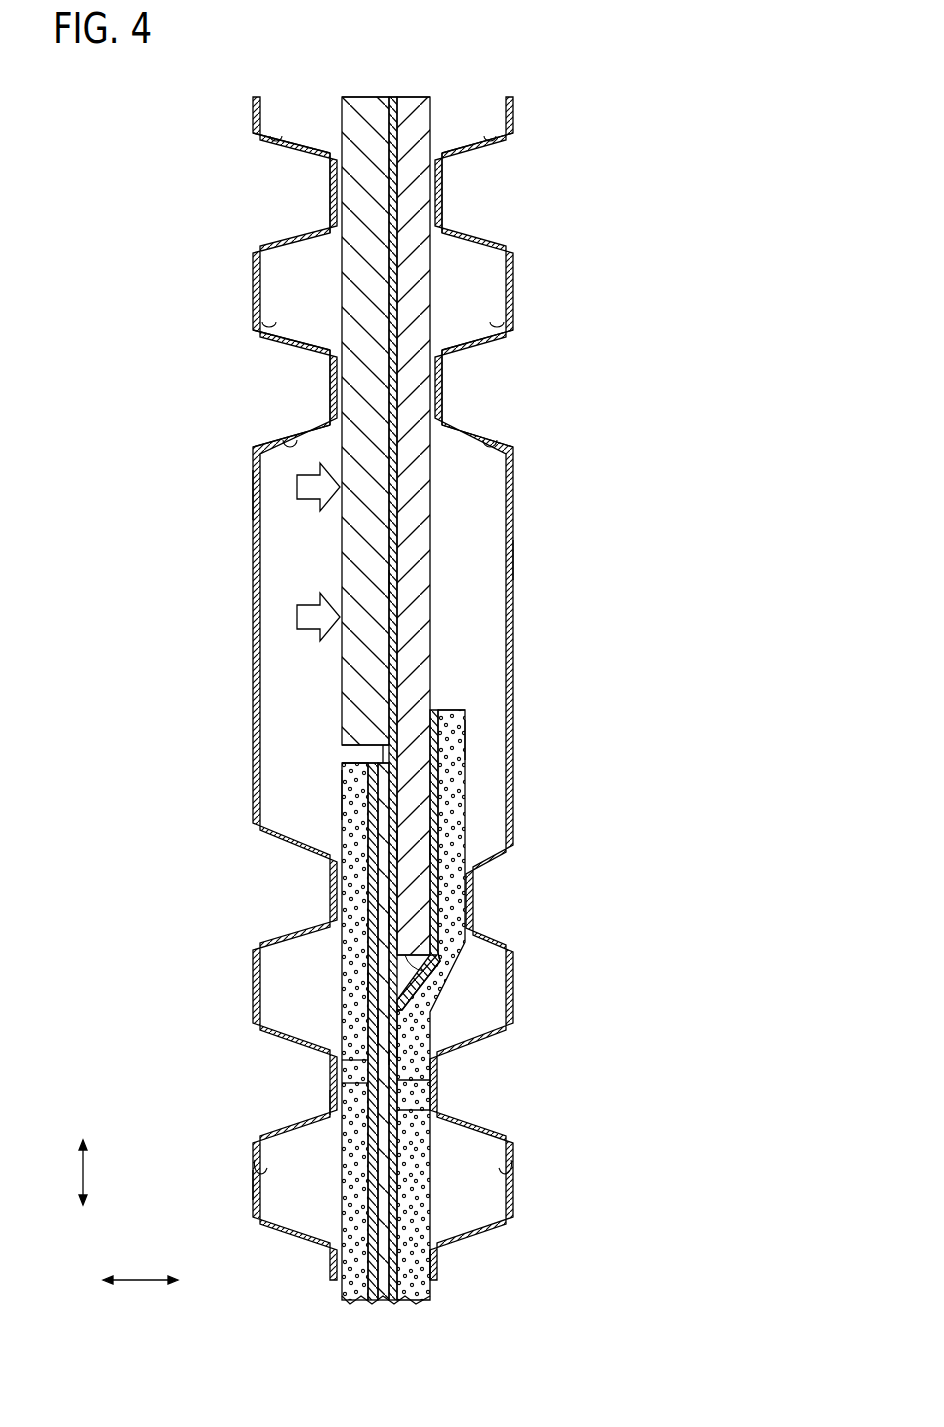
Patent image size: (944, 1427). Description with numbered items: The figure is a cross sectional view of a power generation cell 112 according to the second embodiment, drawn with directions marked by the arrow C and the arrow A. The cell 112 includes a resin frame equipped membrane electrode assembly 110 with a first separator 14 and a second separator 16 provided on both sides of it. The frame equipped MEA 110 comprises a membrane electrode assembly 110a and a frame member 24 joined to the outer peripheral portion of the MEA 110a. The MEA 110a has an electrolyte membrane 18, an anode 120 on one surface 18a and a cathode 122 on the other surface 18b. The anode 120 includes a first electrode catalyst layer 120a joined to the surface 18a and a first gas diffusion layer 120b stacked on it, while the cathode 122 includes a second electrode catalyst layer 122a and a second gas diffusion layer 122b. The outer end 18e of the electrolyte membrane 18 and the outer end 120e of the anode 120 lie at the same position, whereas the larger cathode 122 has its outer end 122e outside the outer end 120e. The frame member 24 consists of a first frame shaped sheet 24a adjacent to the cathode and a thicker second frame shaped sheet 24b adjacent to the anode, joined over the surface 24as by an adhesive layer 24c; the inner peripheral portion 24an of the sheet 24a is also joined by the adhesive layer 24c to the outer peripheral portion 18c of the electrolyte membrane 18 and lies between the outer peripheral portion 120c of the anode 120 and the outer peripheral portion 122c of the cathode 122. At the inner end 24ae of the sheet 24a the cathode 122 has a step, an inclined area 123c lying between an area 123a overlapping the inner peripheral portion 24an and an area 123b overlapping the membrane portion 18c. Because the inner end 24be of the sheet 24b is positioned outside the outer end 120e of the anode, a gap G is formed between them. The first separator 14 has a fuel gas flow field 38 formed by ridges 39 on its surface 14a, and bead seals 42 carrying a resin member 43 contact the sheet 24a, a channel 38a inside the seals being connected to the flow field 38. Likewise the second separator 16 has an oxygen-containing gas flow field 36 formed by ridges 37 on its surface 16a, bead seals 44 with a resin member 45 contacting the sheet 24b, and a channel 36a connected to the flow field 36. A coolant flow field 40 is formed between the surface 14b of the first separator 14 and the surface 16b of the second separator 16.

The power generation cell 112 is at (172, 92).
The first separator 14 is at (250, 460).
The surface of first separator 14a is at (253, 1185).
The surface of first separator 14b is at (257, 493).
The second separator 16 is at (516, 470).
The surface of second separator 16a is at (515, 1160).
The surface of second separator 16b is at (510, 560).
The electrolyte membrane 18 is at (425, 1020).
The one surface of electrolyte membrane 18a is at (385, 1030).
The another surface of electrolyte membrane 18b is at (405, 1045).
The outer peripheral portion of electrolyte membrane 18c is at (372, 985).
The outer end of electrolyte membrane 18e is at (383, 745).
The frame member 24 is at (432, 285).
The first frame shaped sheet 24a is at (408, 218).
The second frame shaped sheet 24b is at (355, 285).
The adhesive layer 24c is at (393, 915).
The inner end of first frame shaped sheet 24ae is at (445, 985).
The inner peripheral portion of first frame shaped sheet 24an is at (410, 845).
The surface of first frame shaped sheet 24as is at (393, 585).
The inner end of second frame shaped sheet 24be is at (357, 746).
The oxygen-containing gas flow field 36 is at (470, 1182).
The channel 36a is at (478, 525).
The ridges 37 is at (348, 1103).
The fuel gas flow field 38 is at (294, 1182).
The channel 38a is at (283, 548).
The ridges 39 is at (395, 1058).
The coolant flow field 40 is at (345, 905).
The bead seals 42 is at (278, 135).
The resin member 43 is at (333, 183).
The bead seals 44 is at (482, 135).
The resin member 45 is at (438, 183).
The resin frame equipped membrane electrode assembly 110 is at (283, 690).
The membrane electrode assembly 110a is at (340, 1165).
The anode 120 is at (196, 1046).
The first electrode catalyst layer 120a is at (363, 1068).
The first gas diffusion layer 120b is at (360, 1083).
The outer peripheral portion of anode 120c is at (355, 805).
The outer end of anode 120e is at (362, 763).
The cathode 122 is at (588, 1073).
The second electrode catalyst layer 122a is at (402, 1080).
The second gas diffusion layer 122b is at (405, 1110).
The outer peripheral portion of cathode 122c is at (455, 732).
The outer end of cathode 122e is at (455, 712).
The area overlapped with inner peripheral portion 123a is at (456, 797).
The area overlapped with electrolyte membrane 123b is at (413, 1262).
The inclined area 123c is at (450, 990).
The gap G is at (355, 778).
The stacking direction C is at (90, 1172).
The width direction A is at (140, 1263).